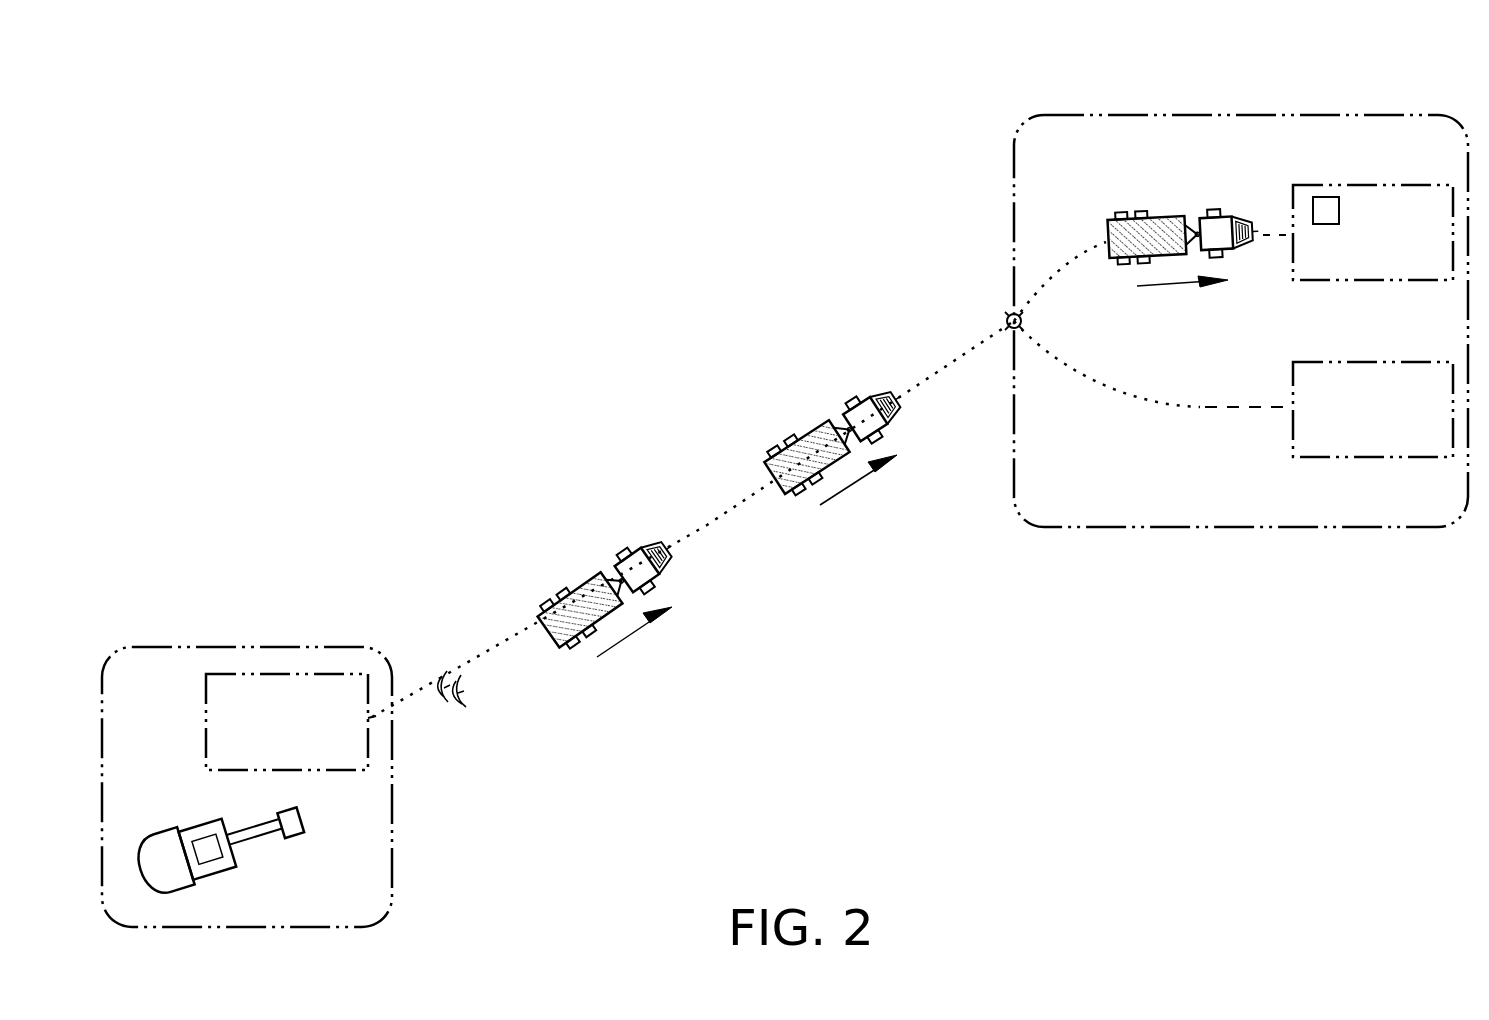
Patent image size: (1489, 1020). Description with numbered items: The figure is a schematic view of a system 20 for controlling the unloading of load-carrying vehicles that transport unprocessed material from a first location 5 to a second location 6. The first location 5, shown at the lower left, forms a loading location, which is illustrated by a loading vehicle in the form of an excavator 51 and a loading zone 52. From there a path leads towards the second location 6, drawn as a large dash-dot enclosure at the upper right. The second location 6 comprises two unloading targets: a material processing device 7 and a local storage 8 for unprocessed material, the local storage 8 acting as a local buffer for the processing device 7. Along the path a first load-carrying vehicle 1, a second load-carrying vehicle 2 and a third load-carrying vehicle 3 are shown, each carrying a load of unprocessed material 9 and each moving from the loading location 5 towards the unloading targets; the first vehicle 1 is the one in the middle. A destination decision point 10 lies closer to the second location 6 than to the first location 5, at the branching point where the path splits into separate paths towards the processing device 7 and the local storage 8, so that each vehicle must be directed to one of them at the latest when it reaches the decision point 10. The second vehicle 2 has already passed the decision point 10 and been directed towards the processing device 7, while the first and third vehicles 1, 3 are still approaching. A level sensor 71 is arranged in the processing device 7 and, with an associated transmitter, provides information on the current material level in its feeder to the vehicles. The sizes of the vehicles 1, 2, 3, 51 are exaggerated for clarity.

The first load-carrying vehicle 1 is at (810, 430).
The second load-carrying vehicle 2 is at (1172, 215).
The third load-carrying vehicle 3 is at (590, 578).
The first location 5 is at (392, 875).
The excavator 51 is at (165, 855).
The loading zone 52 is at (282, 730).
The second location 6 is at (1204, 527).
The material processing device 7 is at (1375, 240).
The level sensor 71 is at (1328, 197).
The local storage 8 is at (1375, 403).
The load of unprocessed material 9 is at (790, 442).
The destination decision point 10 is at (1007, 315).
The system 20 is at (873, 655).